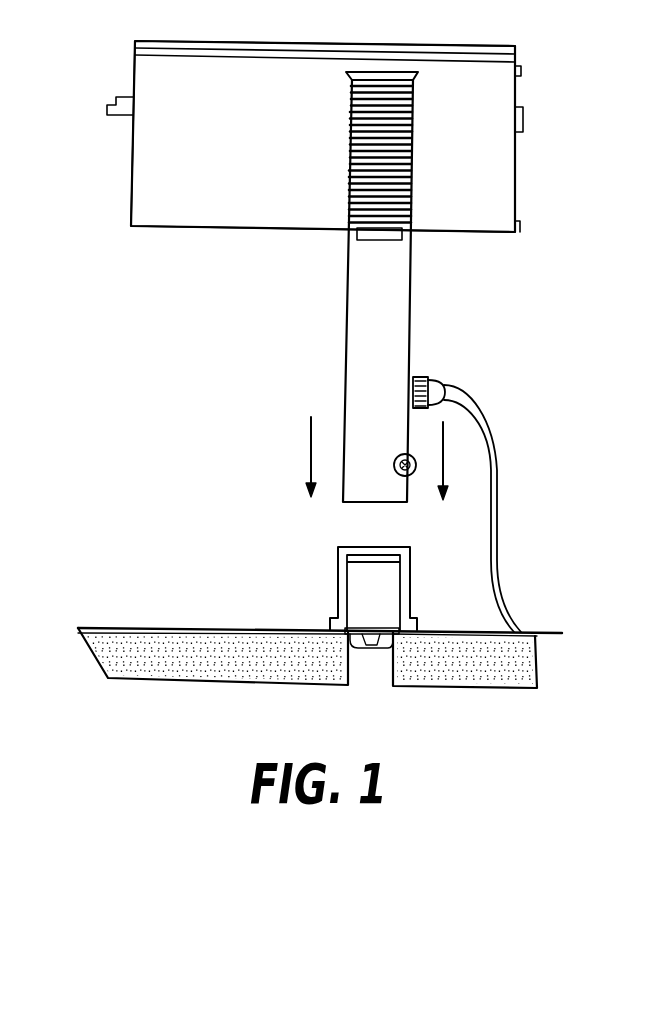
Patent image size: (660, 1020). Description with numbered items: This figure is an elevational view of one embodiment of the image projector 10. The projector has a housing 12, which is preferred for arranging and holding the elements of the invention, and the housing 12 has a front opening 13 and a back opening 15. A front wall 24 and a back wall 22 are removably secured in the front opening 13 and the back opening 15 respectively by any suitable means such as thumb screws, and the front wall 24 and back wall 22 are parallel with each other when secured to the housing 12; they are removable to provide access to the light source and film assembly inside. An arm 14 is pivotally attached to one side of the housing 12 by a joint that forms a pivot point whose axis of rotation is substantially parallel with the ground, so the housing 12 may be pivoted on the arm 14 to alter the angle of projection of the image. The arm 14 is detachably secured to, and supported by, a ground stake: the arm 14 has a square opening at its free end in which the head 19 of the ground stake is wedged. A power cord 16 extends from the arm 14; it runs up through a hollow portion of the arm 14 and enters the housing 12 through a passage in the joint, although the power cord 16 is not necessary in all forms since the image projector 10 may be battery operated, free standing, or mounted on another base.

The image projector 10 is at (281, 285).
The housing 12 is at (470, 215).
The front opening 13 is at (106, 190).
The arm 14 is at (380, 345).
The back opening 15 is at (527, 190).
The power cord 16 is at (498, 465).
The head 19 is at (363, 593).
The back wall 22 is at (516, 148).
The front wall 24 is at (131, 132).